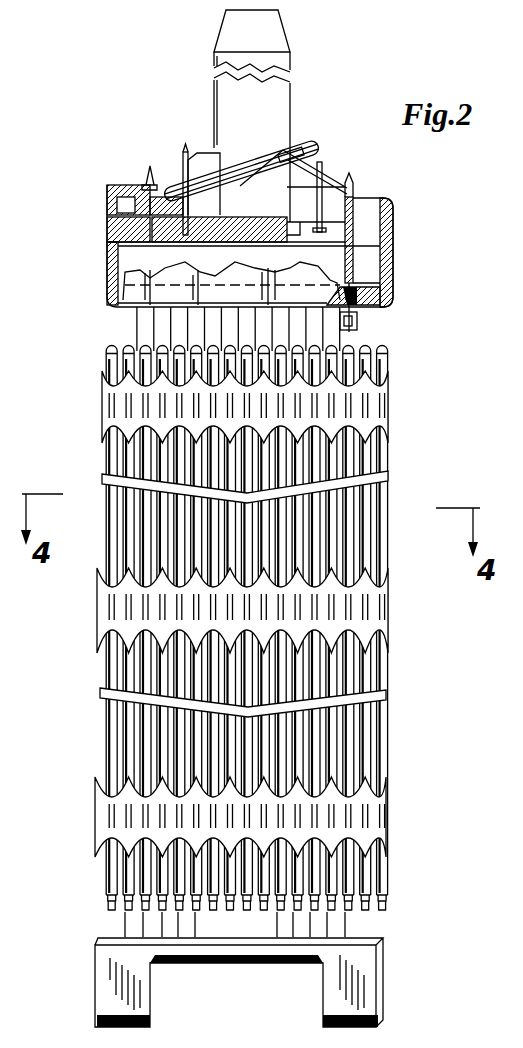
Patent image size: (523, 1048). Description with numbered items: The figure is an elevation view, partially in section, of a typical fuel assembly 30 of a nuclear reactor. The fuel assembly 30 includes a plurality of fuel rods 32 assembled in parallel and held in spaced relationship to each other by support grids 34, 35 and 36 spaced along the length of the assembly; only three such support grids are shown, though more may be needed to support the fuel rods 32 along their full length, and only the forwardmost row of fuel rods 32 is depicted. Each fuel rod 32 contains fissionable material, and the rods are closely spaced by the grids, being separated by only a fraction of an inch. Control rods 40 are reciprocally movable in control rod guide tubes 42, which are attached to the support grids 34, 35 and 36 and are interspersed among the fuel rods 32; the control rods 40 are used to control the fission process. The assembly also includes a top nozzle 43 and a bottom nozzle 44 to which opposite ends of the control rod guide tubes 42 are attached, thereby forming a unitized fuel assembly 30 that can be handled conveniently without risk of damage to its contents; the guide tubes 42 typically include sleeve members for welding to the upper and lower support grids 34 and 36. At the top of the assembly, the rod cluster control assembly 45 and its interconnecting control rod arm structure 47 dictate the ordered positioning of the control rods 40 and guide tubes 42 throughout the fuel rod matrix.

The fuel assembly 30 is at (392, 552).
The fuel rods 32 is at (371, 377).
The support grid 34 is at (373, 420).
The support grid 35 is at (381, 624).
The support grid 36 is at (385, 838).
The control rods 40 is at (370, 311).
The control rod guide tubes 42 is at (150, 323).
The top nozzle 43 is at (396, 223).
The bottom nozzle 44 is at (385, 985).
The rod cluster control assembly 45 is at (227, 108).
The control rod arm structure 47 is at (207, 158).